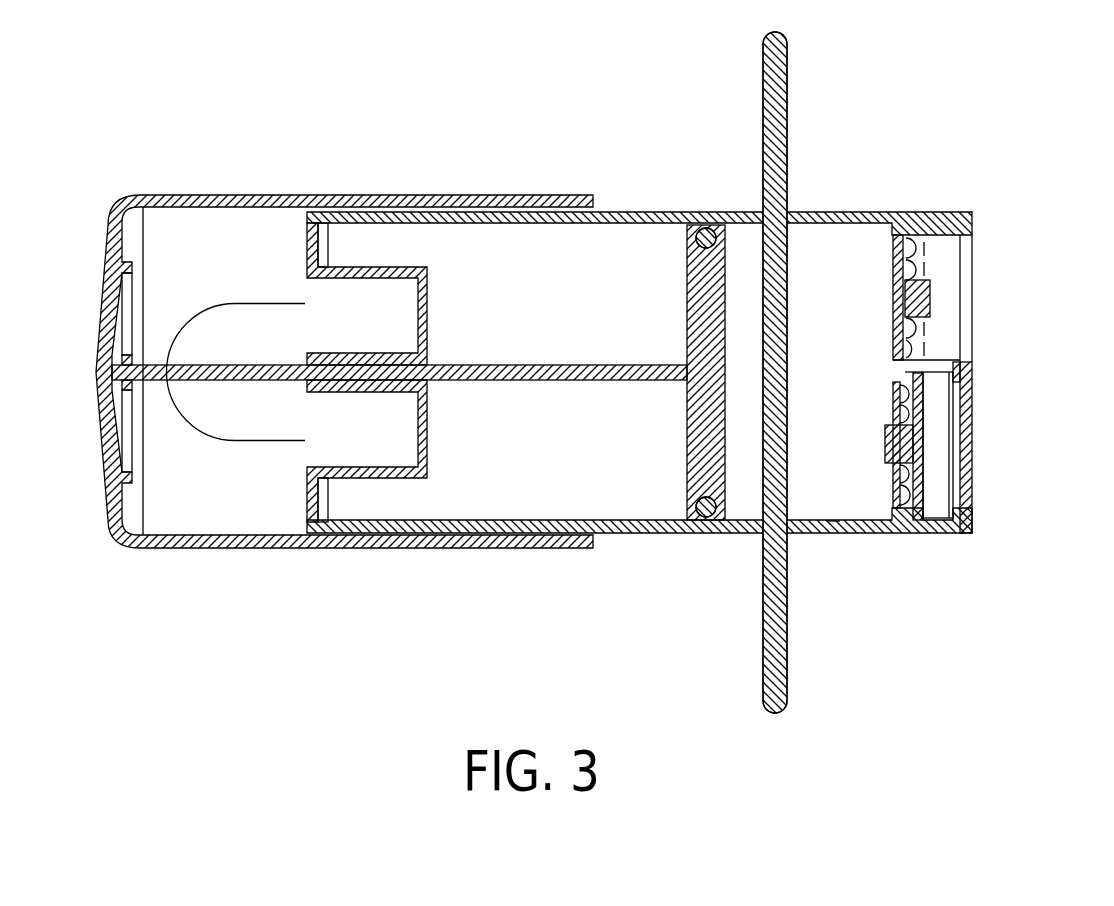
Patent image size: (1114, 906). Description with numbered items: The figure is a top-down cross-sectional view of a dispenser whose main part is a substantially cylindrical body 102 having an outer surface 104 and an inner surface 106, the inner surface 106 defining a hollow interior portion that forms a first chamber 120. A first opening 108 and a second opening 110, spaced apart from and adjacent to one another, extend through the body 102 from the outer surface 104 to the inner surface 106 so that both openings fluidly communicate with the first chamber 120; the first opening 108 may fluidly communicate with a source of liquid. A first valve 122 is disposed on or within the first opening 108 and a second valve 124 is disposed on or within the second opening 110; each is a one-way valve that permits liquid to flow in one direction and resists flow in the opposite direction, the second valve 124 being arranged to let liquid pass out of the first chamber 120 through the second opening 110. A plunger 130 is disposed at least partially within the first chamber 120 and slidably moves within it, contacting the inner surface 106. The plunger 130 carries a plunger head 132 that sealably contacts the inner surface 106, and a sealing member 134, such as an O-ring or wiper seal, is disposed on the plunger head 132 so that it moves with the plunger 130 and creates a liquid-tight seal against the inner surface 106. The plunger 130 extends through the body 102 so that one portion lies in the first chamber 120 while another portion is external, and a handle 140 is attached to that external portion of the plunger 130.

The body 102 is at (773, 527).
The outer surface 104 is at (865, 534).
The inner surface 106 is at (838, 511).
The first opening 108 is at (966, 313).
The second opening 110 is at (942, 423).
The first chamber 120 is at (812, 343).
The first valve 122 is at (917, 295).
The second valve 124 is at (907, 448).
The plunger 130 is at (535, 379).
The plunger head 132 is at (697, 462).
The sealing member 134 is at (701, 228).
The handle 140 is at (217, 550).